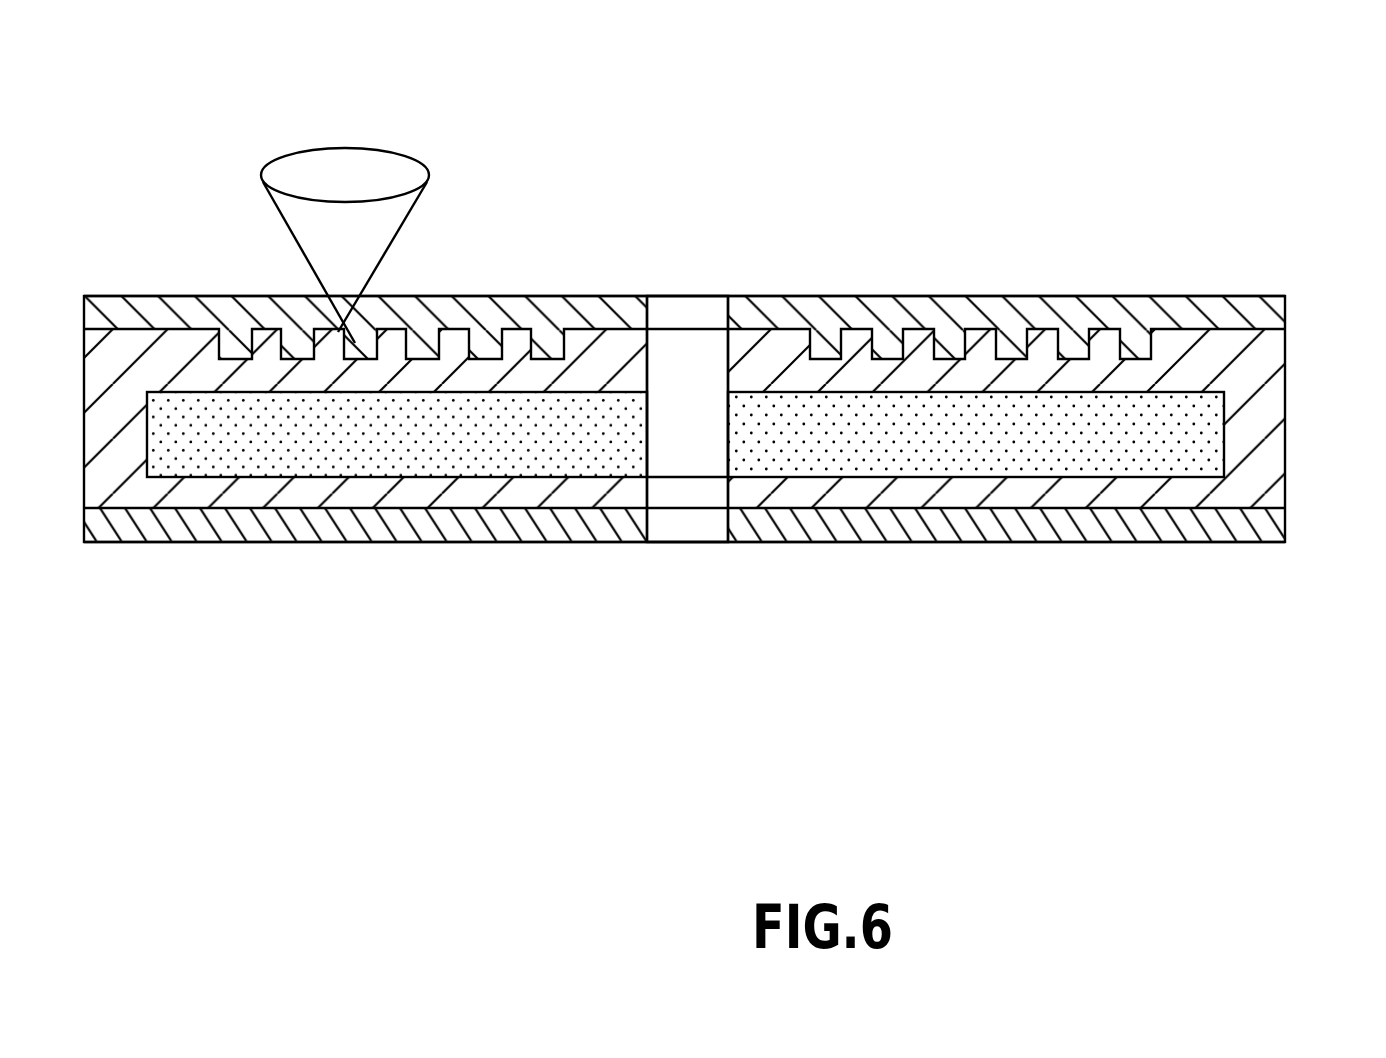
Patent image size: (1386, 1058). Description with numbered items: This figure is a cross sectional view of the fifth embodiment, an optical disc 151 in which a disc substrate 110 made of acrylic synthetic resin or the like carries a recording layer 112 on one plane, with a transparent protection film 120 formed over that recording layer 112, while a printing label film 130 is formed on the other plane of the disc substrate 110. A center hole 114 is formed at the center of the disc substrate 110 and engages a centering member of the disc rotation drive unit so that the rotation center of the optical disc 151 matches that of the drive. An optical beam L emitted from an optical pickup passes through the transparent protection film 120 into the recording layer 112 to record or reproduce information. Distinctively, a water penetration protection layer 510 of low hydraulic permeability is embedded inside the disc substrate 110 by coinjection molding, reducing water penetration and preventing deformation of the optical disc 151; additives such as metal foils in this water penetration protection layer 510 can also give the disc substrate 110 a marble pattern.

The optical disc 151 is at (1171, 212).
The transparent protection film 120 is at (1097, 301).
The recording layer 112 is at (966, 330).
The disc substrate 110 is at (1270, 453).
The water penetration protection layer 510 is at (1190, 408).
The printing label film 130 is at (1278, 520).
The center hole 114 is at (648, 478).
The optical beam L is at (318, 148).